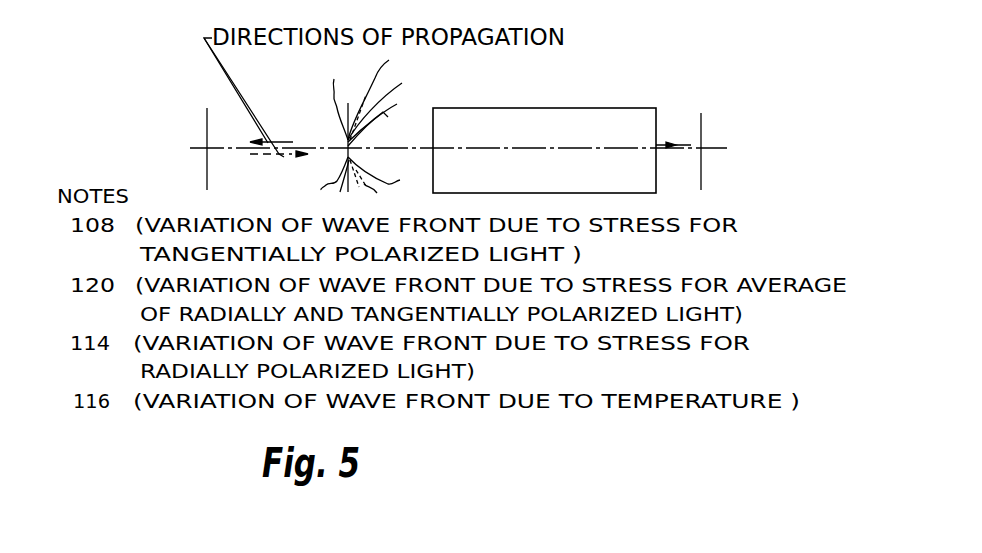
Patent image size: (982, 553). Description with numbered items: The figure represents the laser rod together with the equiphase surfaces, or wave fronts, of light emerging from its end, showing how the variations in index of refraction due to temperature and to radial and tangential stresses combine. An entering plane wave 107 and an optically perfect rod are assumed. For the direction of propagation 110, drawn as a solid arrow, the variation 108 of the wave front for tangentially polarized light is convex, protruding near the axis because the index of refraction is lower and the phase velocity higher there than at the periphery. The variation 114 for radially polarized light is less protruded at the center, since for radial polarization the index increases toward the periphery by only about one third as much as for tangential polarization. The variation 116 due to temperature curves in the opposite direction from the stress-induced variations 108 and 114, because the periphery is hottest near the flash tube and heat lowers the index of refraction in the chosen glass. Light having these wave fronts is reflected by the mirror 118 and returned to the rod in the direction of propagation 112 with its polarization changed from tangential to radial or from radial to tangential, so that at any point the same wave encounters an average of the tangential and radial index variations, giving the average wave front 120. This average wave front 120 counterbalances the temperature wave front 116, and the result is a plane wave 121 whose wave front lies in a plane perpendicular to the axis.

The entering plane wave 107 is at (700, 123).
The variation of the wave front due to stress for tangentially polarized light 108 is at (388, 151).
The direction of propagation 110 is at (293, 142).
The direction of propagation 112 is at (281, 163).
The variation of the wave front due to stress for radially polarized light 114 is at (378, 141).
The variation of the wave front due to temperature 116 is at (313, 192).
The mirror 118 is at (207, 127).
The average wave front 120 is at (389, 152).
The plane wave 121 is at (384, 93).